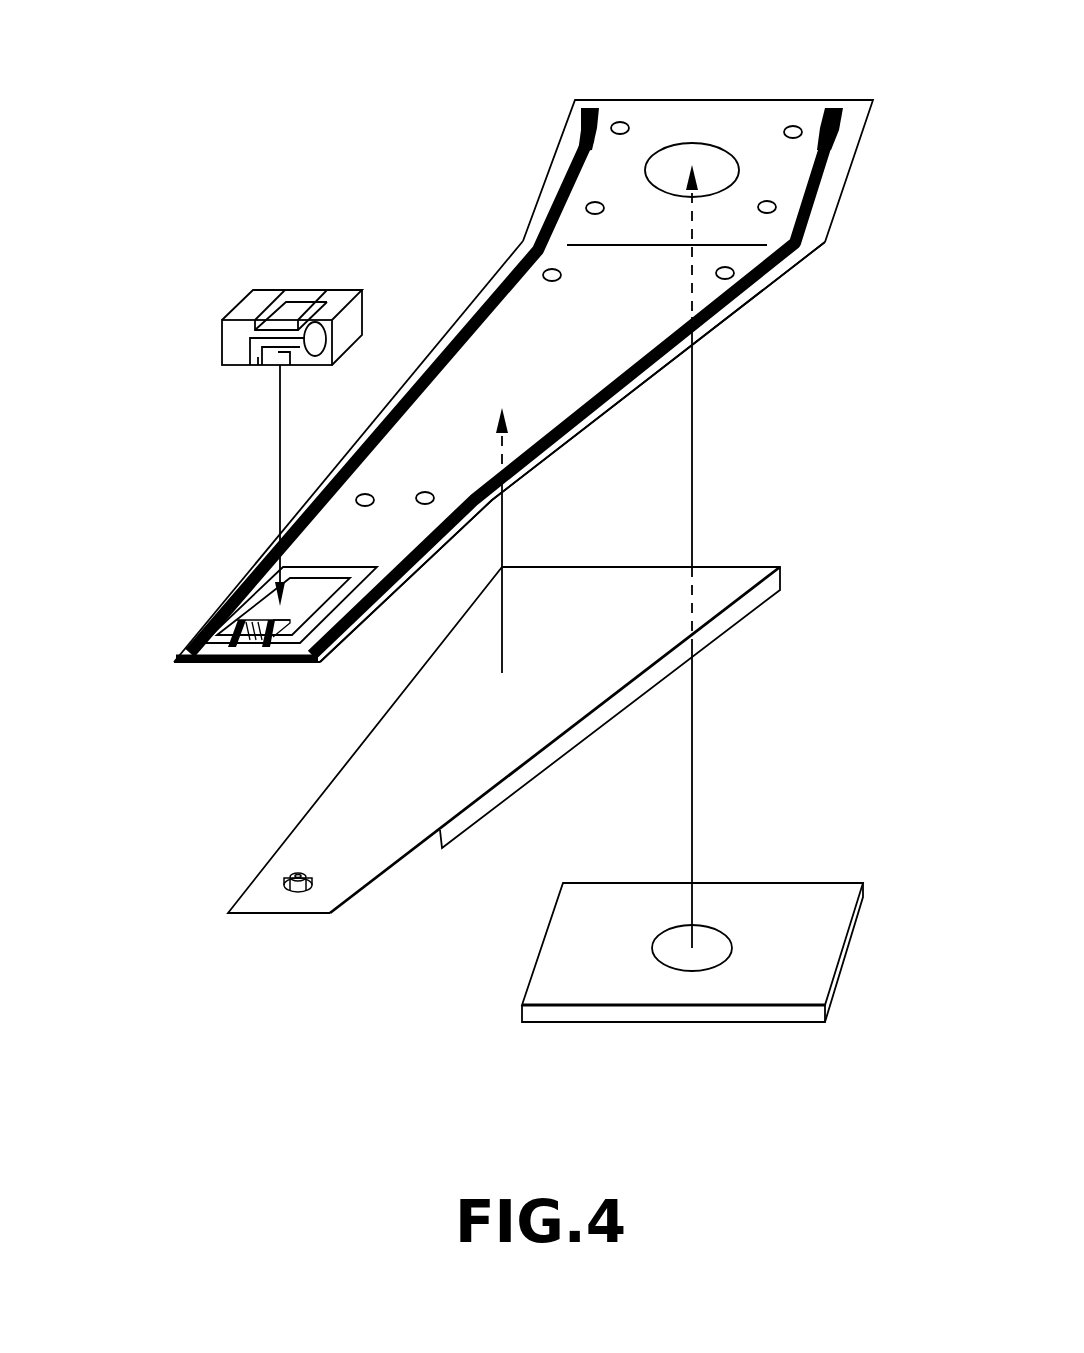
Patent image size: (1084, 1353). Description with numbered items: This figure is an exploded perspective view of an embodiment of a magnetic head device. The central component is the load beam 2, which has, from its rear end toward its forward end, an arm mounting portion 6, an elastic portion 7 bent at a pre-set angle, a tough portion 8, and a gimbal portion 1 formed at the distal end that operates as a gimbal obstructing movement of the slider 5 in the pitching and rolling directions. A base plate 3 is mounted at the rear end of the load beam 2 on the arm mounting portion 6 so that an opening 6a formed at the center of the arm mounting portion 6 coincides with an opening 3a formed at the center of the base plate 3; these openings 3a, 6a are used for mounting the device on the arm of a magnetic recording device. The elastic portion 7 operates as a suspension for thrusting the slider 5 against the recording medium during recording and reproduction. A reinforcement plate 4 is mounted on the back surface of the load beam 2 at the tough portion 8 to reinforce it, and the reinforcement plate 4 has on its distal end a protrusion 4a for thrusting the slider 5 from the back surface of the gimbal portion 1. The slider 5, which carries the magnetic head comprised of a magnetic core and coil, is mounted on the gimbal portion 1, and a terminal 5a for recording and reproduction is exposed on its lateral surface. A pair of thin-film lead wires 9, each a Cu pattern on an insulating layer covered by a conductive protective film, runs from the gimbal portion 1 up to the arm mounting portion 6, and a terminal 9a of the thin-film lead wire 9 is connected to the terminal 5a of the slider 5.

The gimbal portion 1 is at (415, 568).
The load beam 2 is at (468, 236).
The base plate 3 is at (834, 862).
The opening 3a is at (675, 948).
The reinforcement plate 4 is at (757, 634).
The protrusion 4a is at (296, 872).
The slider 5 is at (198, 340).
The terminal 5a is at (278, 365).
The arm mounting portion 6 is at (887, 107).
The opening 6a is at (716, 156).
The elastic portion 7 is at (857, 220).
The tough portion 8 is at (797, 292).
The thin-film lead wire 9 is at (557, 197).
The terminal 9a is at (240, 662).